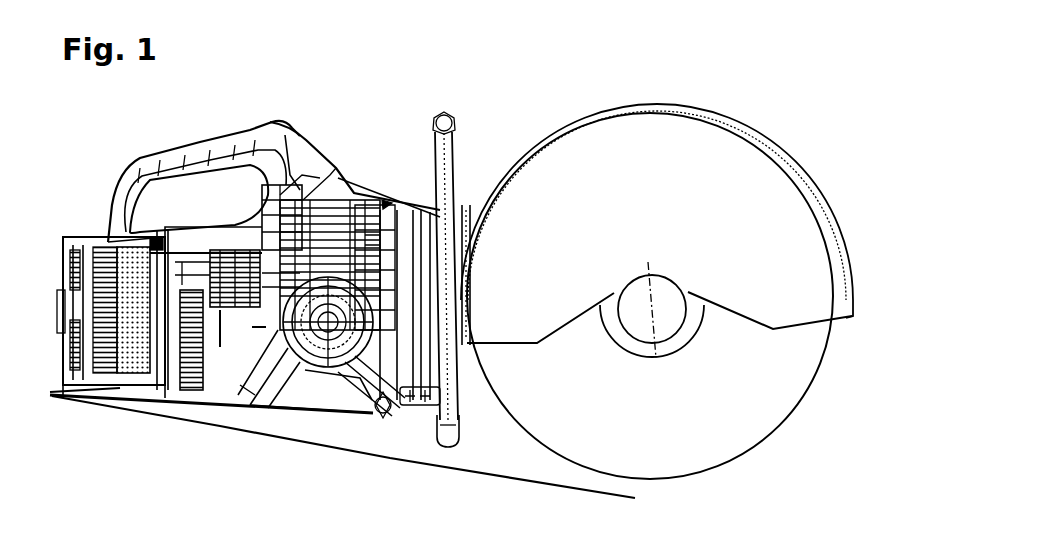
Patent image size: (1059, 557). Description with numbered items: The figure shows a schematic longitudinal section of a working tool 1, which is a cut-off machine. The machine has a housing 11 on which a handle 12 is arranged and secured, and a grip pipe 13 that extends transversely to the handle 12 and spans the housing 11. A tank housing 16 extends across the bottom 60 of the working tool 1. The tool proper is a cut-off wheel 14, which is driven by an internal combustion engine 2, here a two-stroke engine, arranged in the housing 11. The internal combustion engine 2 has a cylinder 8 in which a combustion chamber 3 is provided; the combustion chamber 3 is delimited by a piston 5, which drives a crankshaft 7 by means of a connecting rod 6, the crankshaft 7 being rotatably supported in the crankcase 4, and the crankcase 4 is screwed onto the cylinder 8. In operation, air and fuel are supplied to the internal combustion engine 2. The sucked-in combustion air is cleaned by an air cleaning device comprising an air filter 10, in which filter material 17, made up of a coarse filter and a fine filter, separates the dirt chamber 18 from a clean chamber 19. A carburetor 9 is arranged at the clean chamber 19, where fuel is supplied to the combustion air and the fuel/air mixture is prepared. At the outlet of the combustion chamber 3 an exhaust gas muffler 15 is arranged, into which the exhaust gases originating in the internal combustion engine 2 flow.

The working tool 1 is at (766, 78).
The internal combustion engine 2 is at (345, 192).
The combustion chamber 3 is at (303, 200).
The crankcase 4 is at (300, 366).
The piston 5 is at (367, 205).
The connecting rod 6 is at (300, 362).
The crankshaft 7 is at (332, 366).
The cylinder 8 is at (274, 183).
The carburetor 9 is at (212, 262).
The air filter 10 is at (101, 226).
The housing 11 is at (397, 205).
The handle 12 is at (155, 152).
The grip pipe 13 is at (450, 116).
The cut-off wheel 14 is at (742, 340).
The exhaust gas muffler 15 is at (463, 240).
The tank housing 16 is at (282, 353).
The filter material 17 is at (116, 369).
The dirt chamber 18 is at (75, 372).
The clean chamber 19 is at (163, 372).
The bottom 60 is at (228, 397).